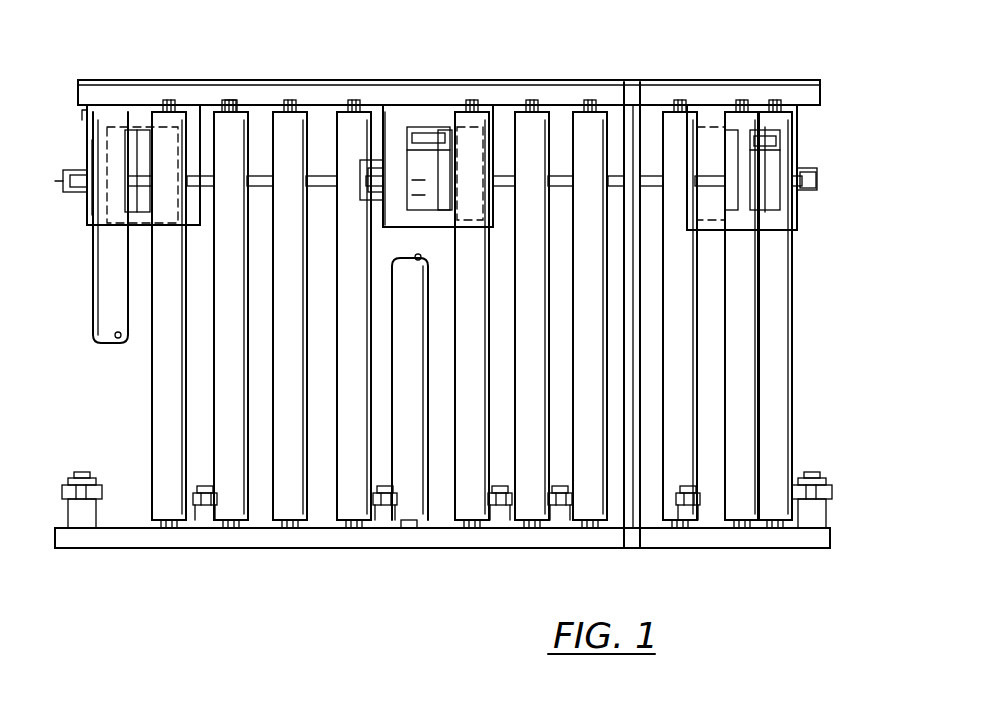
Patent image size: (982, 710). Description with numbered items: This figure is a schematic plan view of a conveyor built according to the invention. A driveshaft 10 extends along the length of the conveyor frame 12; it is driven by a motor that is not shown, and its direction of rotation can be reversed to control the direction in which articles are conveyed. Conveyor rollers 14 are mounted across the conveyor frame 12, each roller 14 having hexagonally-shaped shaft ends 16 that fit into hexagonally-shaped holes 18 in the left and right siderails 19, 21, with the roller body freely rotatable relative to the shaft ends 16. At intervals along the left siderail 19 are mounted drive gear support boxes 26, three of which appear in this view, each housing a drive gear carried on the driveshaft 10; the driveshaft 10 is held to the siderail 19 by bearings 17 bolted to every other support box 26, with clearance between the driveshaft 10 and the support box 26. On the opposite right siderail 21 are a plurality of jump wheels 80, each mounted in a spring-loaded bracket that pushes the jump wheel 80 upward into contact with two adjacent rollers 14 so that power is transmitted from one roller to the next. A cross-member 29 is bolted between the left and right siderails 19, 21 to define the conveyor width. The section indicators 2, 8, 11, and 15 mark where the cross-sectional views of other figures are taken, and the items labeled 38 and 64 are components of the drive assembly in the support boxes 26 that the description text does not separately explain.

The section line 2 is at (320, 528).
The section line 8 is at (373, 75).
The driveshaft 10 is at (806, 172).
The section line 11 is at (505, 470).
The conveyor frame 12 is at (668, 80).
The conveyor roller 14 is at (103, 315).
The section line 15 is at (452, 48).
The shaft end 16 is at (236, 108).
The bearing 17 is at (378, 122).
The hexagonally-shaped hole 18 is at (226, 108).
The left siderail 19 is at (768, 128).
The right siderail 21 is at (768, 548).
The drive gear support box 26 is at (87, 136).
The cross-member 29 is at (626, 100).
The bearing sleeve 38 is at (137, 128).
The drive housing 64 is at (420, 126).
The jump wheel 80 is at (96, 490).